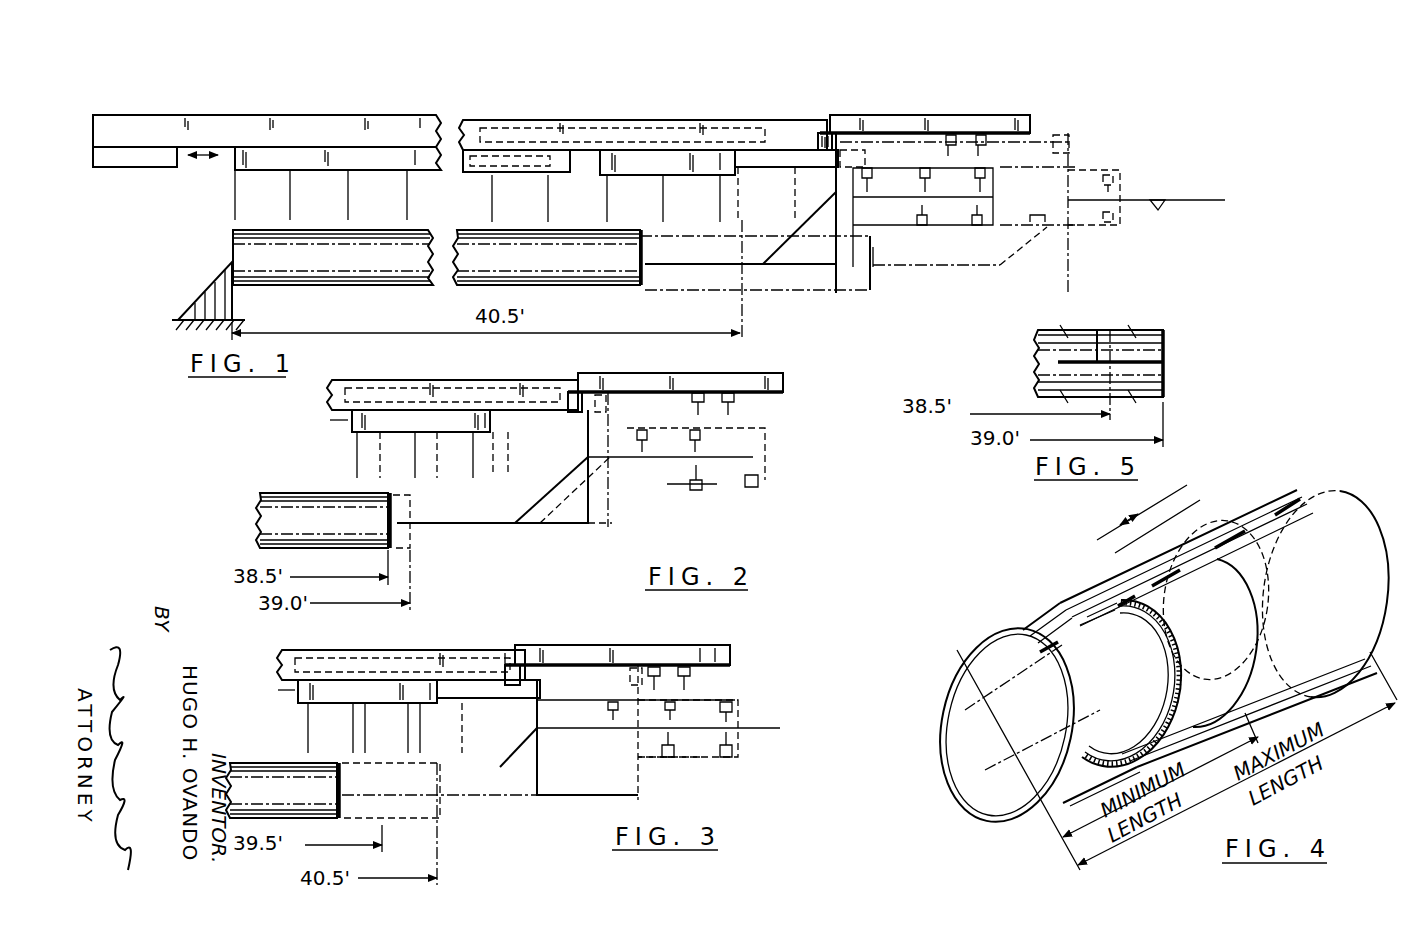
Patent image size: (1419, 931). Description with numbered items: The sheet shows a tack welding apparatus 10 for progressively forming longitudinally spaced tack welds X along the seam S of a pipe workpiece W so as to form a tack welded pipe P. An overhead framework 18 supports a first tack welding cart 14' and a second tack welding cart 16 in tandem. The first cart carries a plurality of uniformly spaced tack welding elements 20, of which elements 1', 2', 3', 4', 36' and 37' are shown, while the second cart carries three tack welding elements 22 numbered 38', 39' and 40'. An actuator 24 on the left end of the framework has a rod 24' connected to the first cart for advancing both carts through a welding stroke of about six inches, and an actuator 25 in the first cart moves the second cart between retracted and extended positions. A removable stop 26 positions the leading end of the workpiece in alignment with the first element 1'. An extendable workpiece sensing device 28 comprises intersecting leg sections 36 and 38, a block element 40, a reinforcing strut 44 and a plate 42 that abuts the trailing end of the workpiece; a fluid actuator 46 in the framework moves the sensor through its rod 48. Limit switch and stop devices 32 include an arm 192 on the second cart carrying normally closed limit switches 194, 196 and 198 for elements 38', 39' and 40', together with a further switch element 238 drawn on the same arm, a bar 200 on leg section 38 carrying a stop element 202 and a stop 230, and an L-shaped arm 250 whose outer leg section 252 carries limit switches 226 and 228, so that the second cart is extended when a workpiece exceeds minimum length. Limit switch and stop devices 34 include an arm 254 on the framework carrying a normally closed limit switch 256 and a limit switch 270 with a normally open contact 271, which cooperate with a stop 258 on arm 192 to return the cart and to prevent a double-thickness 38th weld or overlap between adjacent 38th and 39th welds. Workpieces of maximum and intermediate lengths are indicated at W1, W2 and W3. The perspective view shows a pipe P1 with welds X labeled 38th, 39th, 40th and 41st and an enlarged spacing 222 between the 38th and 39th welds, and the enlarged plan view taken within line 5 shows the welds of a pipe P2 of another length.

In FIG. 1, the tack welding apparatus 10 is at (300, 92).
In FIG. 1, the overhead framework 18 is at (378, 130).
In FIG. 2, the overhead framework 18 is at (365, 378).
In FIG. 3, the overhead framework 18 is at (355, 665).
In FIG. 1, the second tack welding cart 16 is at (660, 150).
In FIG. 2, the second tack welding cart 16 is at (452, 412).
In FIG. 3, the second tack welding cart 16 is at (419, 691).
In FIG. 1, the actuator 24 is at (132, 174).
In FIG. 1, the actuator rod 24' is at (187, 178).
In FIG. 1, the first tack welding cart 14' is at (316, 179).
In FIG. 1, the first tack welding element 1' is at (251, 195).
In FIG. 1, the tack welding element 2' is at (307, 195).
In FIG. 1, the tack welding element 3' is at (368, 195).
In FIG. 1, the tack welding element 4' is at (429, 195).
In FIG. 1, the tack welding elements 20 is at (295, 213).
In FIG. 1, the actuator 25 is at (496, 111).
In FIG. 1, the fluid actuator 46 is at (600, 138).
In FIG. 2, the fluid actuator 46 is at (422, 372).
In FIG. 1, the tack welding element 36' is at (510, 198).
In FIG. 1, the tack welding element 37' is at (519, 206).
In FIG. 1, the tack welding element 38' is at (630, 198).
In FIG. 1, the tack welding element 39' is at (688, 198).
In FIG. 2, the tack welding element 39' is at (457, 489).
In FIG. 3, the tack welding element 39' is at (389, 737).
In FIG. 1, the tack welding element 40' is at (757, 194).
In FIG. 2, the tack welding element 40' is at (521, 471).
In FIG. 3, the tack welding element 40' is at (467, 722).
In FIG. 1, the tack welding elements 22 is at (608, 210).
In FIG. 1, the block element 40 is at (936, 160).
In FIG. 2, the block element 40 is at (626, 409).
In FIG. 3, the block element 40 is at (623, 648).
In FIG. 1, the arm 254 is at (850, 112).
In FIG. 2, the arm 254 is at (590, 372).
In FIG. 3, the arm 254 is at (560, 655).
In FIG. 1, the arm 192 is at (875, 130).
In FIG. 2, the arm 192 is at (528, 428).
In FIG. 3, the arm 192 is at (730, 700).
In FIG. 1, the actuator rod 48 is at (895, 130).
In FIG. 1, the normally closed limit switch 256 is at (950, 132).
In FIG. 2, the normally closed limit switch 256 is at (692, 392).
In FIG. 3, the normally closed limit switch 256 is at (655, 665).
In FIG. 1, the limit switch 270 is at (1010, 98).
In FIG. 2, the limit switch 270 is at (718, 392).
In FIG. 3, the limit switch 270 is at (700, 665).
In FIG. 1, the cooperative limit switch and stop devices 34 is at (995, 150).
In FIG. 2, the cooperative limit switch and stop devices 34 is at (740, 412).
In FIG. 3, the cooperative limit switch and stop devices 34 is at (715, 680).
In FIG. 1, the normally closed limit switch 196 is at (895, 175).
In FIG. 1, the pin 238 is at (947, 182).
In FIG. 1, the normally closed limit switch 198 is at (995, 185).
In FIG. 3, the normally closed limit switch 198 is at (740, 718).
In FIG. 1, the normally closed limit switch 194 is at (858, 180).
In FIG. 2, the normally closed limit switch 194 is at (637, 435).
In FIG. 3, the normally closed limit switch 194 is at (608, 708).
In FIG. 1, the stop element 202 is at (862, 197).
In FIG. 2, the stop element 202 is at (645, 450).
In FIG. 3, the stop element 202 is at (640, 718).
In FIG. 1, the bar 200 is at (918, 245).
In FIG. 1, the stop 230 is at (927, 225).
In FIG. 2, the stop 230 is at (702, 482).
In FIG. 3, the stop 230 is at (735, 740).
In FIG. 1, the limit switch 226 is at (930, 230).
In FIG. 2, the limit switch 226 is at (700, 487).
In FIG. 3, the limit switch 226 is at (690, 757).
In FIG. 1, the limit switch 228 is at (988, 215).
In FIG. 2, the limit switch 228 is at (760, 487).
In FIG. 3, the limit switch 228 is at (740, 755).
In FIG. 1, the cooperative limit switch and stop devices 32 is at (1130, 180).
In FIG. 2, the cooperative limit switch and stop devices 32 is at (647, 465).
In FIG. 1, the L-shaped arm 250 is at (1122, 225).
In FIG. 2, the L-shaped arm 250 is at (762, 478).
In FIG. 1, the outer leg section 252 is at (1100, 245).
In FIG. 2, the outer leg section 252 is at (678, 502).
In FIG. 3, the outer leg section 252 is at (640, 725).
In FIG. 1, the leg section 38 is at (1027, 247).
In FIG. 2, the leg section 38 is at (479, 480).
In FIG. 3, the leg section 38 is at (505, 755).
In FIG. 1, the reinforcing and stiffening strut 44 is at (790, 240).
In FIG. 2, the reinforcing and stiffening strut 44 is at (535, 500).
In FIG. 3, the reinforcing and stiffening strut 44 is at (518, 759).
In FIG. 1, the leg section 36 is at (902, 295).
In FIG. 1, the workpiece sensing device 28 is at (780, 270).
In FIG. 2, the workpiece sensing device 28 is at (605, 530).
In FIG. 3, the workpiece sensing device 28 is at (560, 800).
In FIG. 1, the removable stop 26 is at (205, 300).
In FIG. 1, the plate 42 is at (648, 278).
In FIG. 2, the plate 42 is at (395, 522).
In FIG. 3, the plate 42 is at (343, 782).
In FIG. 2, the normally open contact 271 is at (785, 382).
In FIG. 2, the stop 258 is at (722, 430).
In FIG. 3, the stop 258 is at (700, 690).
In FIG. 4, the enlarged spacing 222 is at (1118, 525).
In FIG. 4, the view boundary line 5 is at (1250, 589).
In FIG. 1, the workpiece W is at (585, 262).
In FIG. 2, the workpiece W is at (325, 531).
In FIG. 3, the workpiece W is at (280, 801).
In FIG. 1, the maximum length workpiece W1 is at (818, 280).
In FIG. 2, the workpiece W2 is at (400, 555).
In FIG. 3, the workpiece W3 is at (425, 822).
In FIG. 5, the seam S is at (1042, 360).
In FIG. 4, the seam S is at (1172, 590).
In FIG. 4, the tack welded pipe P is at (1242, 645).
In FIG. 4, the tack welded pipe P1 is at (1340, 565).
In FIG. 5, the pipe P2 is at (1165, 390).
In FIG. 4, the tack welds X is at (1010, 645).
In FIG. 5, the thirty-eighth weld 38th is at (1105, 330).
In FIG. 4, the thirty-eighth weld 38th is at (1183, 585).
In FIG. 5, the thirty-ninth weld 39th is at (1150, 362).
In FIG. 4, the thirty-ninth weld 39th is at (1240, 535).
In FIG. 4, the 40th weld 40th is at (1272, 504).
In FIG. 4, the 41st weld 41st is at (1315, 490).